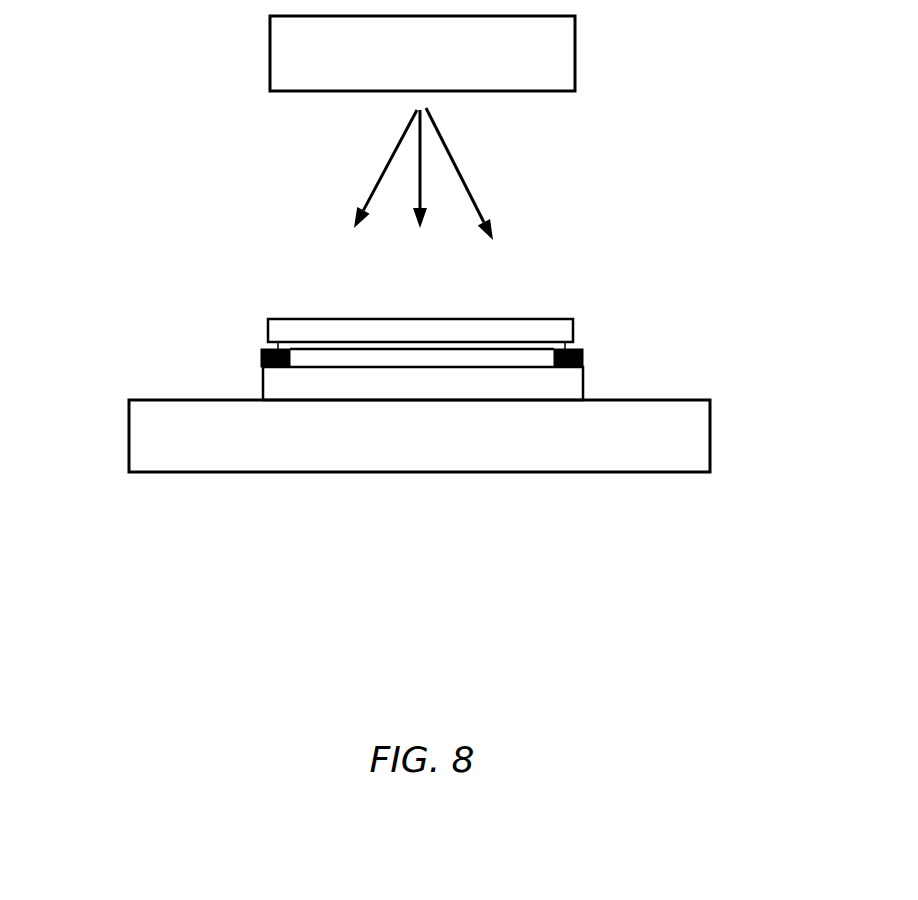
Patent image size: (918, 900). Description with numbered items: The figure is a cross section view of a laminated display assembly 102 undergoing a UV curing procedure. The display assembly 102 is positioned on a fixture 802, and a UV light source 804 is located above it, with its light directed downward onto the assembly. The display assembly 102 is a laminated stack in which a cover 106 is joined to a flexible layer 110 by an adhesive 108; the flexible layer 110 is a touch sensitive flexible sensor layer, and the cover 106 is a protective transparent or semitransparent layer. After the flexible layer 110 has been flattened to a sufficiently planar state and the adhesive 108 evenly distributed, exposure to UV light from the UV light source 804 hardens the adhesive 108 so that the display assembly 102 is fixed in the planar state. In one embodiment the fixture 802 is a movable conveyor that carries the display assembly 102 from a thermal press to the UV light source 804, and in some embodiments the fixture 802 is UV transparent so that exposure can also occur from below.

The UV light source 804 is at (422, 128).
The fixture 802 is at (710, 448).
The laminated display assembly 102 is at (262, 378).
The cover 106 is at (583, 390).
The adhesive 108 is at (572, 345).
The flexible layer 110 is at (268, 330).